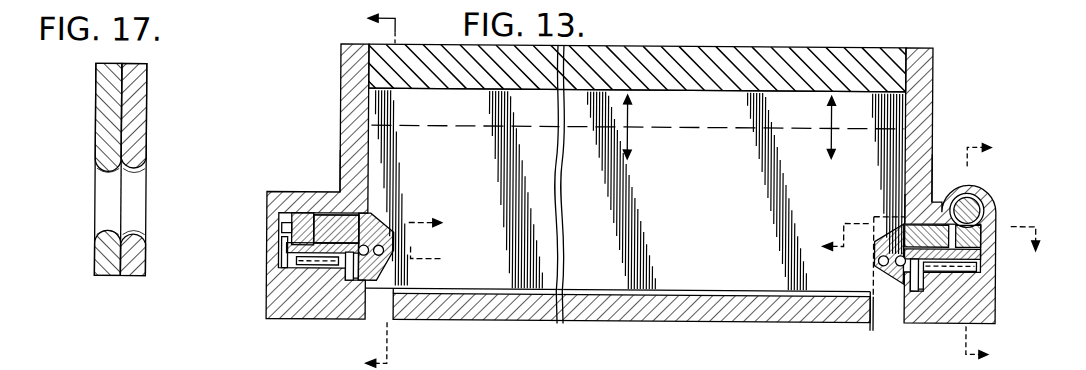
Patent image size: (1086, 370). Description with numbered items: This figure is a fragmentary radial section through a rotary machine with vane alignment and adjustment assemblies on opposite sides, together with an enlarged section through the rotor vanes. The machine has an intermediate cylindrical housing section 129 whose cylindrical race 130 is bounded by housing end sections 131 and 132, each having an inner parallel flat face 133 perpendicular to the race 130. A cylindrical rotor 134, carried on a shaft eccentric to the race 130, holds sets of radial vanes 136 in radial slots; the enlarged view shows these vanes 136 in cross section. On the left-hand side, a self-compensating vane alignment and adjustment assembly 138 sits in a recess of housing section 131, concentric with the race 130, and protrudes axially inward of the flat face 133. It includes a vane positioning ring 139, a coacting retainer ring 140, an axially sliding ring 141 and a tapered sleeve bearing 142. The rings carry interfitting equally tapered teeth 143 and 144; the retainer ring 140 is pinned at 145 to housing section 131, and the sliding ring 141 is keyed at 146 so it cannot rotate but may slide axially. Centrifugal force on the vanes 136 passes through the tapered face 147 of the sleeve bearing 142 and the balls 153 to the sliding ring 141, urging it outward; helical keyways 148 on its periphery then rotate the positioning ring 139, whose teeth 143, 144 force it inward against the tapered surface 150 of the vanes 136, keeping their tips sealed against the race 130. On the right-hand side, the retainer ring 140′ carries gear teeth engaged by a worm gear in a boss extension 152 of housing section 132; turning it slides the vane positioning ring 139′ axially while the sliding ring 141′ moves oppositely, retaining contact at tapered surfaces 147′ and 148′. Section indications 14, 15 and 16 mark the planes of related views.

In FIG. 13, the intermediate cylindrical housing section 129 is at (665, 52).
In FIG. 13, the cylindrical race 130 is at (723, 88).
In FIG. 13, the housing end section 131 is at (278, 295).
In FIG. 13, the housing end section 132 is at (978, 292).
In FIG. 13, the inner parallel flat face 133 is at (372, 160).
In FIG. 13, the cylindrical rotor 134 is at (687, 323).
In FIG. 17, the radial vane 136 is at (132, 102).
In FIG. 13, the self-compensating vane alignment and adjustment assembly 138 is at (332, 227).
In FIG. 13, the vane positioning ring 139 is at (343, 192).
In FIG. 13, the vane positioning ring 139′ is at (927, 222).
In FIG. 13, the retainer ring 140 is at (300, 213).
In FIG. 13, the retainer ring 140′ is at (982, 230).
In FIG. 13, the axially sliding ring 141 is at (288, 250).
In FIG. 13, the sliding ring 141′ is at (983, 260).
In FIG. 13, the tapered sleeve bearing 142 is at (345, 268).
In FIG. 13, the tapered tooth 143 is at (938, 200).
In FIG. 13, the tapered tooth 144 is at (948, 265).
In FIG. 13, the pin 145 is at (283, 227).
In FIG. 13, the key 146 is at (283, 257).
In FIG. 13, the tapered face 147 is at (362, 278).
In FIG. 13, the tapered surface 147′ is at (885, 273).
In FIG. 13, the helical keyway 148 is at (372, 212).
In FIG. 13, the tapered surface 148′ is at (880, 237).
In FIG. 13, the tapered surface 150 is at (372, 220).
In FIG. 13, the boss extension 152 is at (972, 185).
In FIG. 13, the balls 153 is at (388, 248).
In FIG. 13, the section line 14- 14 is at (980, 246).
In FIG. 13, the section line 15- 15 is at (941, 238).
In FIG. 13, the section line 16- 16 is at (368, 189).